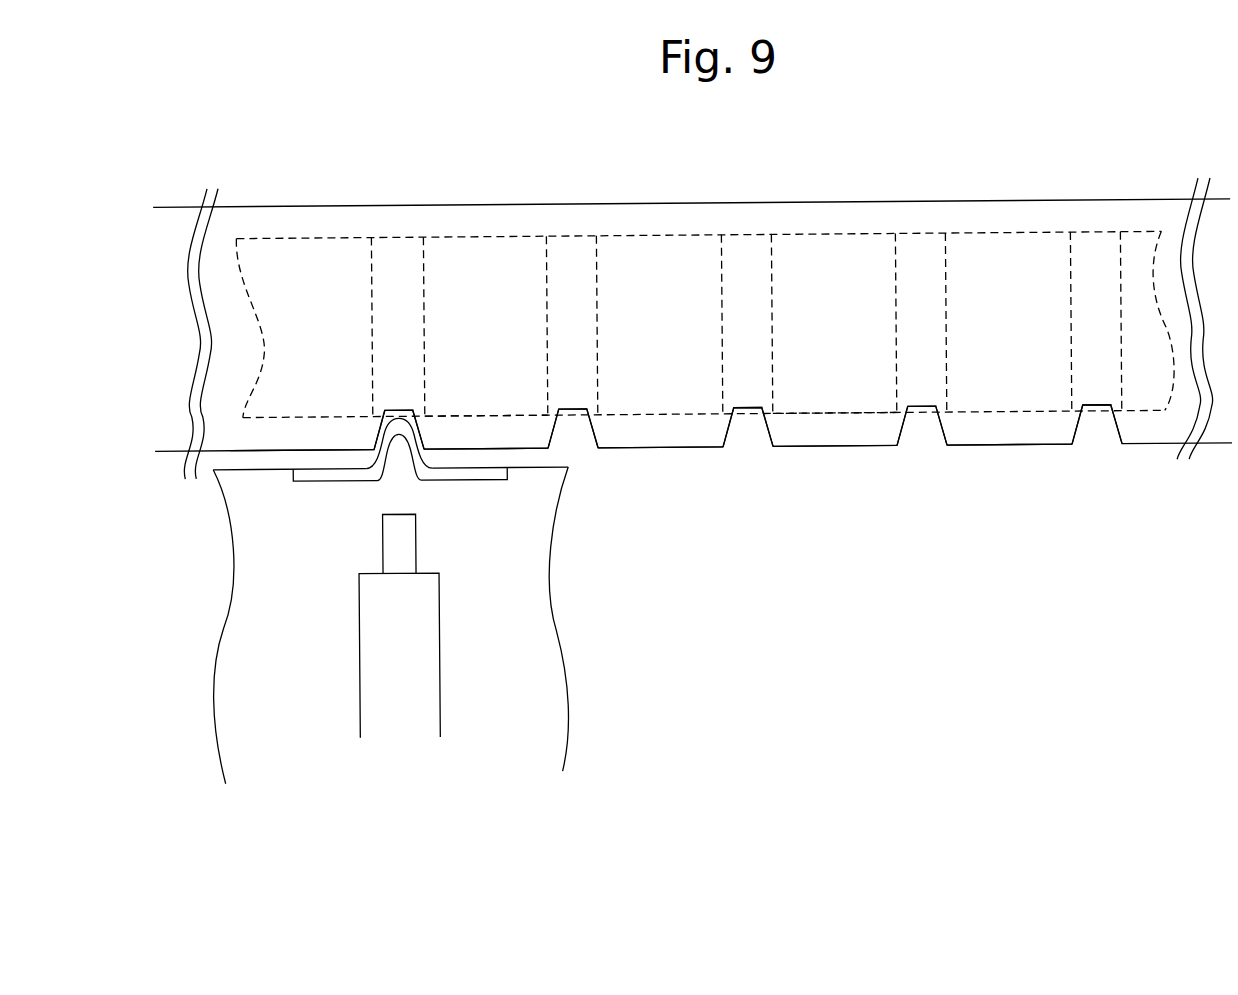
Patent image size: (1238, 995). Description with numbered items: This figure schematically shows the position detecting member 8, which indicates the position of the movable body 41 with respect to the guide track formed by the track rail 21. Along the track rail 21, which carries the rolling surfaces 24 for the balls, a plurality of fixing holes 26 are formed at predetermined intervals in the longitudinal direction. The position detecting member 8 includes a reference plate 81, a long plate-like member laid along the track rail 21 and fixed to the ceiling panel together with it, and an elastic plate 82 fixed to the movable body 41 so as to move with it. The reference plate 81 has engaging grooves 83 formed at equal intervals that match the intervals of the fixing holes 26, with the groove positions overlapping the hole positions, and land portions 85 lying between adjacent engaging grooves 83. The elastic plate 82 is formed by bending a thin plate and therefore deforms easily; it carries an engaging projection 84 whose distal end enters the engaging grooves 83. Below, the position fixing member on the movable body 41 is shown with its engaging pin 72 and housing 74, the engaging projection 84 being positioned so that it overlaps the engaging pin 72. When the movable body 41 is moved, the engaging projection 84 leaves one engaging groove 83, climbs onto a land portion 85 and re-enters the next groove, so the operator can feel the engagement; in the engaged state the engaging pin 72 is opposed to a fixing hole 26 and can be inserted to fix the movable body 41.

The position detecting member 8 is at (693, 467).
The track rail 21 is at (468, 230).
The rolling surface 24 is at (485, 418).
The fixing hole 26 is at (373, 255).
The movable body 41 is at (250, 558).
The engaging pin 72 is at (410, 541).
The housing 74 is at (427, 662).
The reference plate 81 is at (614, 452).
The elastic plate 82 is at (442, 484).
The engaging groove 83 is at (405, 425).
The engaging projection 84 is at (390, 434).
The land portion 85 is at (263, 434).